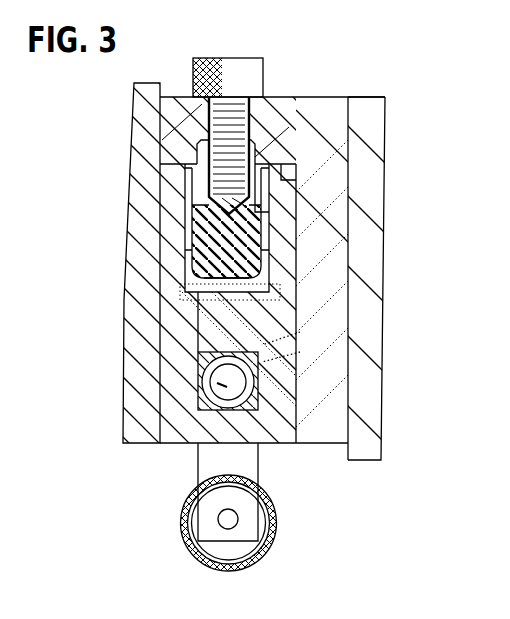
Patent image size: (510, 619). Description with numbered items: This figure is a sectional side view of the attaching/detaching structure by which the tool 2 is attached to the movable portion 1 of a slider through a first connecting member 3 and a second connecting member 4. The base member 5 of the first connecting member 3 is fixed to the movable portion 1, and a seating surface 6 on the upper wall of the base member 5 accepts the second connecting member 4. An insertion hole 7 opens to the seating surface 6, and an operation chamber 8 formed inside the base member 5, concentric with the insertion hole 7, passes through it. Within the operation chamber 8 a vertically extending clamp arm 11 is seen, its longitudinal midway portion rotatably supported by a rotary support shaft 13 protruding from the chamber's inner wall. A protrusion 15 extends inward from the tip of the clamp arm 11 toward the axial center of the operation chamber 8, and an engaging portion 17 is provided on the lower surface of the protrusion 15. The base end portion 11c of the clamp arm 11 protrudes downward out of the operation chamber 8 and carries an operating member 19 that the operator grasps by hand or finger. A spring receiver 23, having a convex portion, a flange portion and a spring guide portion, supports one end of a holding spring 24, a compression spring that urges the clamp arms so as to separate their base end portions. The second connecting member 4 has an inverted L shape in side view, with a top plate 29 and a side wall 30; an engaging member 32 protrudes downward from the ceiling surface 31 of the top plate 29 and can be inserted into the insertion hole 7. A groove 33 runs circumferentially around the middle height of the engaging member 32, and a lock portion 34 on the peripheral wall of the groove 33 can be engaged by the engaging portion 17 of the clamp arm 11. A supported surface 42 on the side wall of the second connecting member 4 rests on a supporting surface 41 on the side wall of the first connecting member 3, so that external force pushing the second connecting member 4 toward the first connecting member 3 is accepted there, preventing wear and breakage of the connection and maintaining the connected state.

The movable portion 1 is at (134, 128).
The tool 2 is at (382, 151).
The first connecting member 3 is at (152, 325).
The second connecting member 4 is at (382, 102).
The base member 5 is at (218, 330).
The seating surface 6 is at (253, 140).
The insertion hole 7 is at (186, 181).
The operation chamber 8 is at (192, 262).
The clamp arm 11 is at (213, 478).
The base end portion 11c is at (250, 523).
The rotary support shaft 13 is at (180, 288).
The protrusion 15 is at (196, 195).
The engaging portion 17 is at (192, 228).
The operating member 19 is at (197, 547).
The spring receiver 23 is at (202, 392).
The holding spring 24 is at (199, 422).
The top plate 29 is at (313, 97).
The side wall 30 is at (380, 208).
The ceiling surface 31 is at (295, 164).
The engaging member 32 is at (270, 278).
The groove 33 is at (286, 229).
The lock portion 34 is at (185, 199).
The supporting surface 41 is at (300, 332).
The supported surface 42 is at (300, 352).